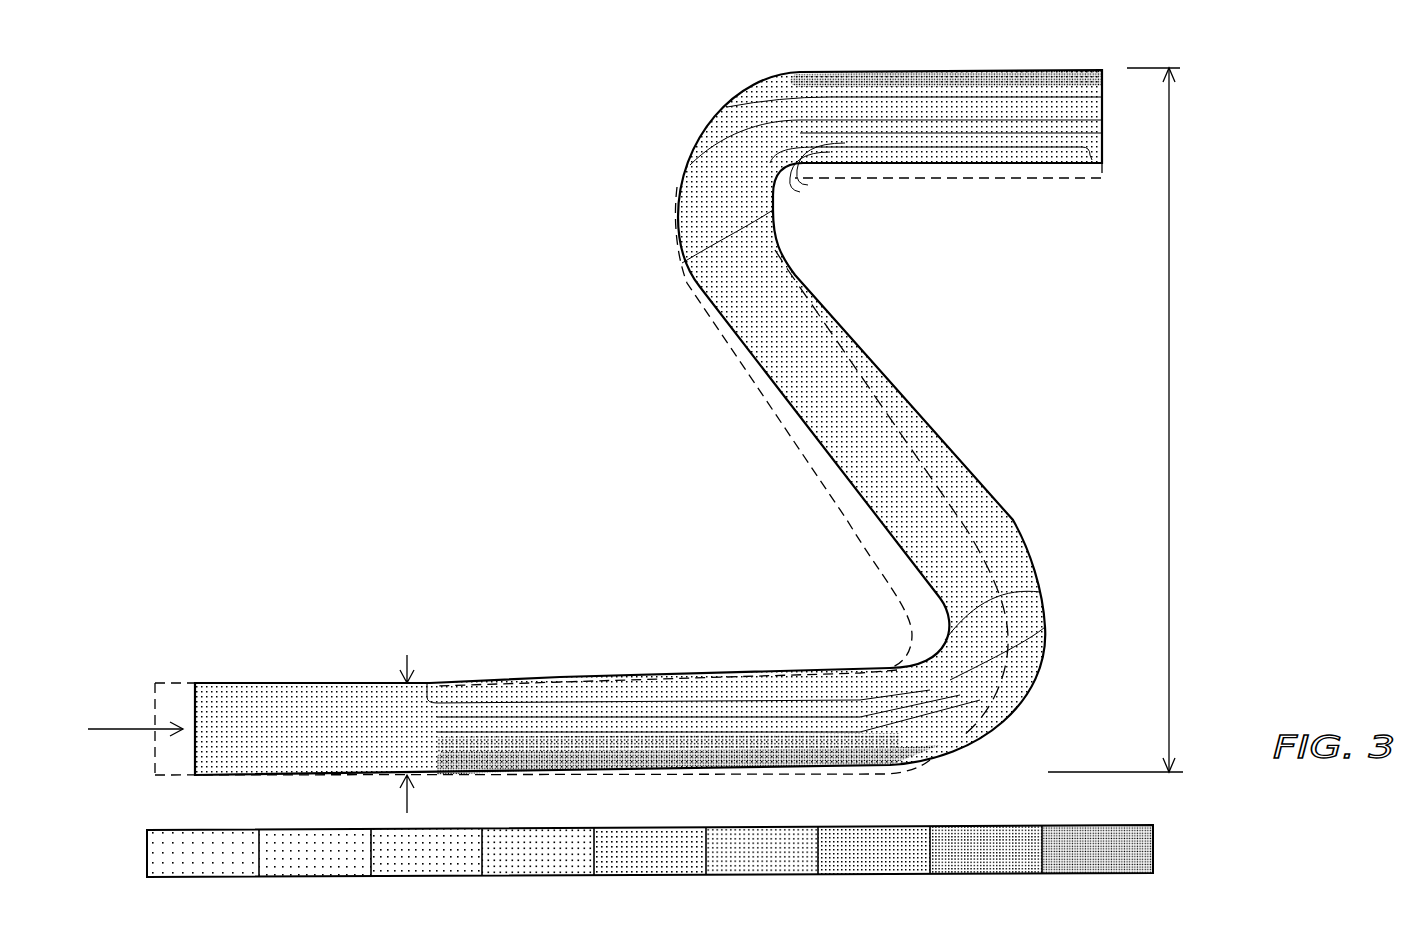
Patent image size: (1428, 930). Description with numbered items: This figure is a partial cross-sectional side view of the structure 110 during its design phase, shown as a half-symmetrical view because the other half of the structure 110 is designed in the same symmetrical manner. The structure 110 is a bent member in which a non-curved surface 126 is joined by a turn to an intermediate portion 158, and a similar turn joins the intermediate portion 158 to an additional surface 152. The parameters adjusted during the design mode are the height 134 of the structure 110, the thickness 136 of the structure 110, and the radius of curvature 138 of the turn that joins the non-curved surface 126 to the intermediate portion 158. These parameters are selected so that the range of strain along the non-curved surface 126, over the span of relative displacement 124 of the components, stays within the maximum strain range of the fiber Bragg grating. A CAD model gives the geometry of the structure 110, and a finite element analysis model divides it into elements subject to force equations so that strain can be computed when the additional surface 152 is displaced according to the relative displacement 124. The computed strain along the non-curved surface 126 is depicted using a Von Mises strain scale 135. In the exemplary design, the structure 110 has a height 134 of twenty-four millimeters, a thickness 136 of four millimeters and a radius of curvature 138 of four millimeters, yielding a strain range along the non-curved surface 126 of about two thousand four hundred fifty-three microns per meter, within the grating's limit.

The structure 110 is at (522, 342).
The span of relative displacement 124 is at (122, 729).
The non-curved surface 126 is at (852, 73).
The height 134 is at (1173, 420).
The Von Mises strain scale 135 is at (1168, 848).
The thickness 136 is at (407, 660).
The radius of curvature 138 is at (732, 185).
The additional surface 152 is at (279, 715).
The intermediate portion 158 is at (835, 413).